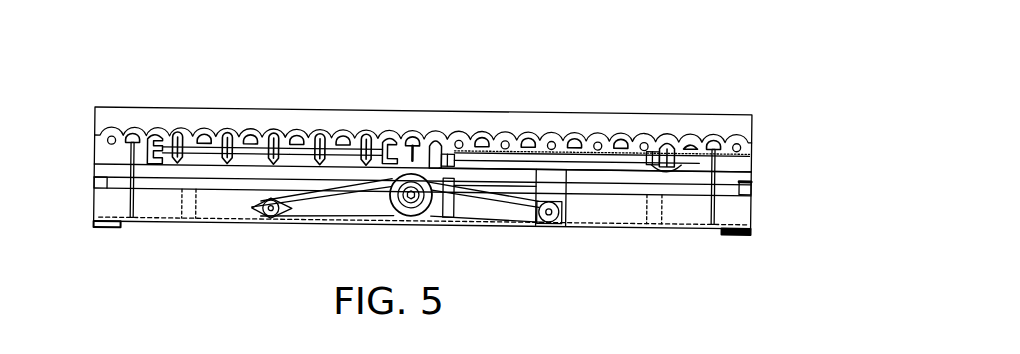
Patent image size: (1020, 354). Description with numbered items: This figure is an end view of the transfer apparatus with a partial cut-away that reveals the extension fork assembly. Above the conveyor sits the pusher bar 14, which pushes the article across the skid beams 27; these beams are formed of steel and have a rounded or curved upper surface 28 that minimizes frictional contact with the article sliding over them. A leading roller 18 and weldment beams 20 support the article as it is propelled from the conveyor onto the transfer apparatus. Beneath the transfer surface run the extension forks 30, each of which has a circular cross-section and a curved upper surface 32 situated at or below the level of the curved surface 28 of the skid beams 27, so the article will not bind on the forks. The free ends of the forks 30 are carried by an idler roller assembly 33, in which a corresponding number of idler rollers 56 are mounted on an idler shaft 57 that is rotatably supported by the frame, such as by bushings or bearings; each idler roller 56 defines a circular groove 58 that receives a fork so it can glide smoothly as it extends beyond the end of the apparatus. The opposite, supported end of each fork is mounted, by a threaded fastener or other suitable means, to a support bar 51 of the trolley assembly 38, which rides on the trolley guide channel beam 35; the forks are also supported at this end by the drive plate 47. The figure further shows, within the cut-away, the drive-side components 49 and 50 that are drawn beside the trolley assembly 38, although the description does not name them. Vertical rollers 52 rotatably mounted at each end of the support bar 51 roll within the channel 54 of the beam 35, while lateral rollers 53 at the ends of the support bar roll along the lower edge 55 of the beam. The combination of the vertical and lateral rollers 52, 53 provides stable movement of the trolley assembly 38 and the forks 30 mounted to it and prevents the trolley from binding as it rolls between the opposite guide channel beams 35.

The pusher bar 14 is at (745, 122).
The leading roller 18 is at (105, 138).
The weldment beams 20 is at (127, 143).
The skid beams 27 is at (577, 130).
The curved upper surface 28 is at (450, 135).
The extension forks 30 is at (268, 125).
The upper surface 32 is at (382, 134).
The idler roller assembly 33 is at (193, 162).
The trolley guide channel beam 35 is at (165, 128).
The trolley assembly 38 is at (605, 165).
The drive plate 47 is at (593, 182).
The belt 49 is at (500, 212).
The drive pulley 50 is at (413, 205).
The support bar 51 is at (488, 155).
The vertical rollers 52 is at (672, 130).
The lateral rollers 53 is at (640, 143).
The channel 54 is at (165, 152).
The lower edge 55 is at (193, 158).
The idler rollers 56 is at (323, 125).
The idler shaft 57 is at (362, 125).
The circular groove 58 is at (298, 148).